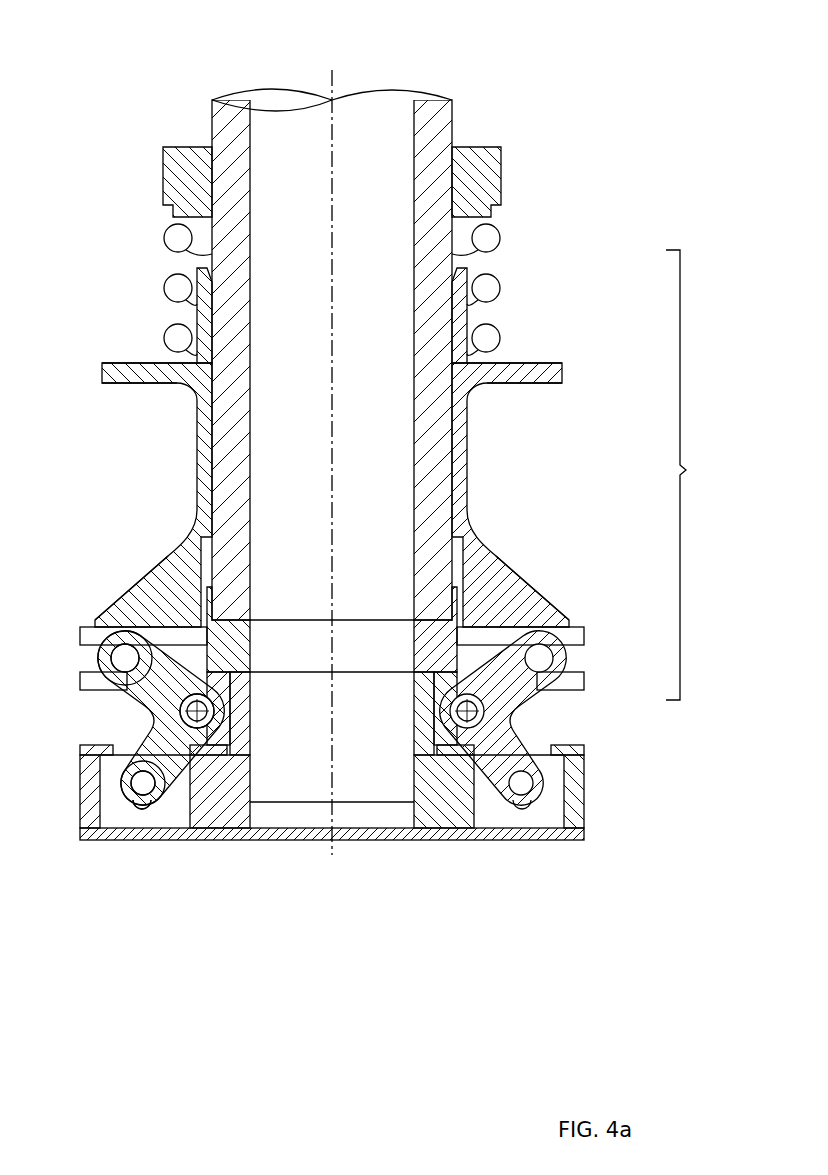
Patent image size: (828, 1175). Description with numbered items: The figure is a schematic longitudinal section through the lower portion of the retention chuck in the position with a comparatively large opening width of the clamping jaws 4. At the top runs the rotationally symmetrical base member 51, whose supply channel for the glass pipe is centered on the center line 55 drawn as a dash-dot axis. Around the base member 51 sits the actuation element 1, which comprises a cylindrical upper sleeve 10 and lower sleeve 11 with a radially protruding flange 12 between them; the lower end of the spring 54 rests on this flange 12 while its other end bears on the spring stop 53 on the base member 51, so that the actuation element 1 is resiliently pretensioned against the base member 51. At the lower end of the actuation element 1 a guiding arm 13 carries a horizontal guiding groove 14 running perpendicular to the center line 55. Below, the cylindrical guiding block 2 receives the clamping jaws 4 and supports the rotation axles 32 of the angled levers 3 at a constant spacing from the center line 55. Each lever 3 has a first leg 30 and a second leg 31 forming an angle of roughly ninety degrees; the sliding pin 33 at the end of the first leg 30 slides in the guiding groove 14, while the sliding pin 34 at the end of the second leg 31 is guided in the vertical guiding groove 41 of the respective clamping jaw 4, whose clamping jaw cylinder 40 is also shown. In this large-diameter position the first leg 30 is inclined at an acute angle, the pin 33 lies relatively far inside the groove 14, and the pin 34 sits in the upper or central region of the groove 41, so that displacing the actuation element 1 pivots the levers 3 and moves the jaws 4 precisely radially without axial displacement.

The actuation element 1 is at (701, 475).
The guiding block 2 is at (228, 653).
The angled lever 3 is at (142, 695).
The clamping jaw 4 is at (243, 822).
The upper sleeve 10 is at (463, 326).
The lower sleeve 11 is at (456, 477).
The flange 12 is at (551, 374).
The guiding arm 13 is at (513, 597).
The guiding groove 14 is at (576, 664).
The first leg 30 is at (106, 660).
The second leg 31 is at (128, 801).
The rotation axle 32 is at (200, 713).
The sliding pin 33 is at (125, 658).
The sliding pin 34 is at (140, 785).
The clamping jaw cylinder 40 is at (577, 797).
The guiding groove 41 is at (142, 809).
The base member 51 is at (433, 110).
The spring stop 53 is at (488, 168).
The spring 54 is at (489, 258).
The center line 55 is at (336, 76).